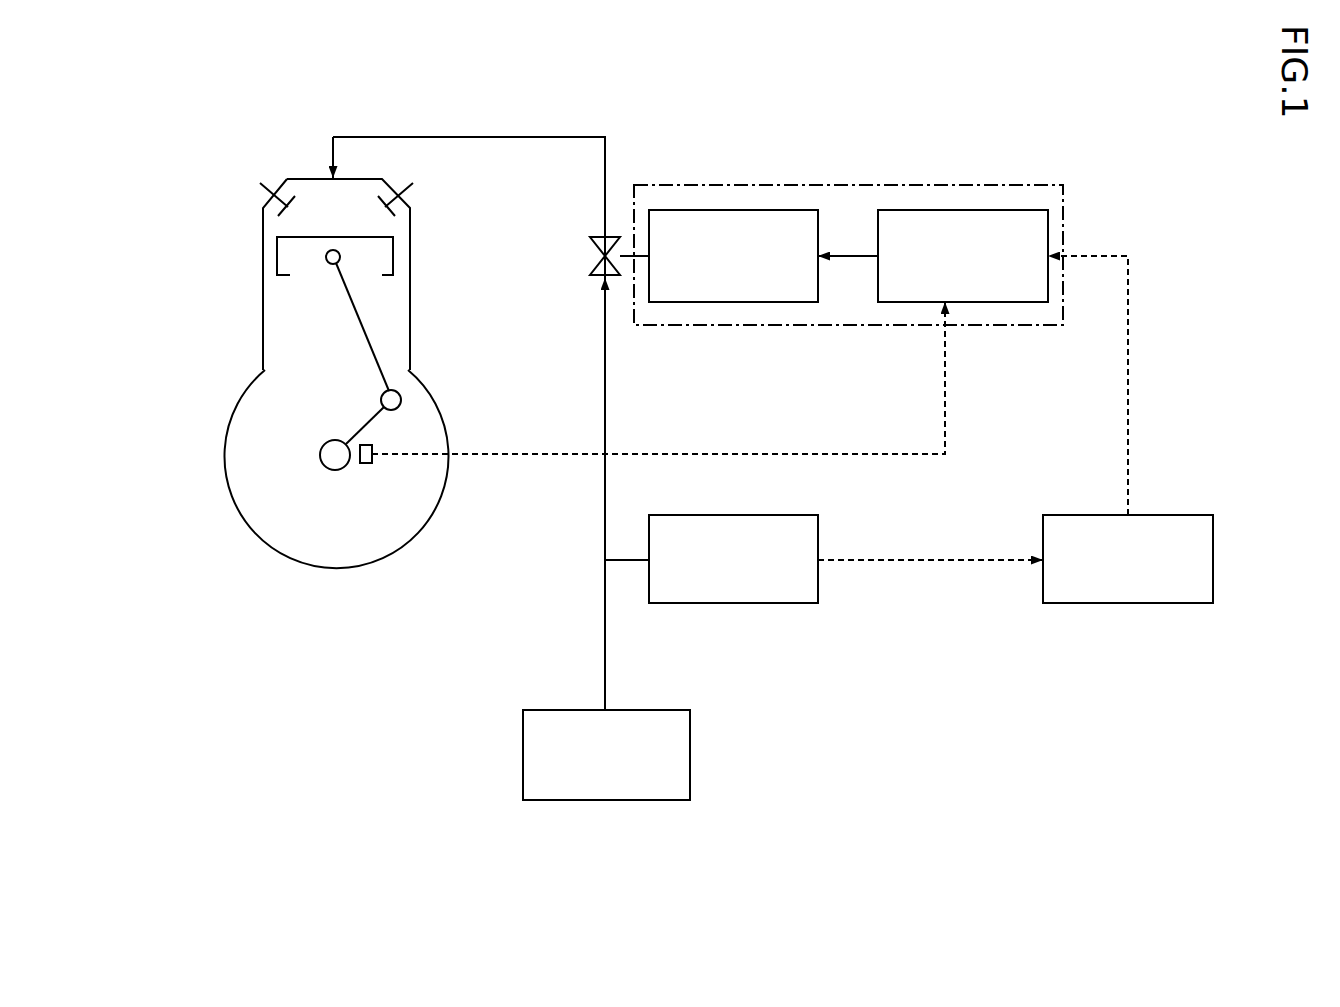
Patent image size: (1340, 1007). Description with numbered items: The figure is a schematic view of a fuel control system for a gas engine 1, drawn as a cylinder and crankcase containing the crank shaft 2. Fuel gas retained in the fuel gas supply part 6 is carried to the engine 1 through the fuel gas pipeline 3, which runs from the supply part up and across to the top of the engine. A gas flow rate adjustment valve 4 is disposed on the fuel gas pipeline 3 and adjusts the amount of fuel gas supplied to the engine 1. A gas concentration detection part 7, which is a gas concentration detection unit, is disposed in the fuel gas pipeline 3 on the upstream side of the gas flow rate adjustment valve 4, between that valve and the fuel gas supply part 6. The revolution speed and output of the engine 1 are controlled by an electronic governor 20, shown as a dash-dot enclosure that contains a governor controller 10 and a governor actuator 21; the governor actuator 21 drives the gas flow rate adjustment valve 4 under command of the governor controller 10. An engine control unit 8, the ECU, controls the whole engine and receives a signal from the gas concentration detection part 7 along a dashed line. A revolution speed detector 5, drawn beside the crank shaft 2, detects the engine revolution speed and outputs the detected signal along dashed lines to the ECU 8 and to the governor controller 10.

The gas engine 1 is at (265, 362).
The crank shaft 2 is at (340, 470).
The fuel gas pipeline 3 is at (475, 137).
The gas flow rate adjustment valve 4 is at (590, 248).
The revolution speed detector 5 is at (375, 460).
The fuel gas supply part 6 is at (610, 800).
The gas concentration detection part 7 is at (753, 603).
The engine control unit 8 is at (1175, 603).
The governor controller 10 is at (960, 210).
The electronic governor 20 is at (1000, 325).
The governor actuator 21 is at (757, 210).